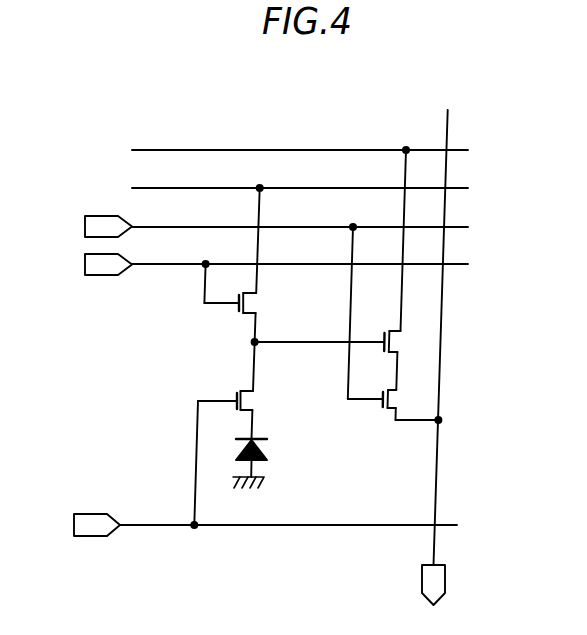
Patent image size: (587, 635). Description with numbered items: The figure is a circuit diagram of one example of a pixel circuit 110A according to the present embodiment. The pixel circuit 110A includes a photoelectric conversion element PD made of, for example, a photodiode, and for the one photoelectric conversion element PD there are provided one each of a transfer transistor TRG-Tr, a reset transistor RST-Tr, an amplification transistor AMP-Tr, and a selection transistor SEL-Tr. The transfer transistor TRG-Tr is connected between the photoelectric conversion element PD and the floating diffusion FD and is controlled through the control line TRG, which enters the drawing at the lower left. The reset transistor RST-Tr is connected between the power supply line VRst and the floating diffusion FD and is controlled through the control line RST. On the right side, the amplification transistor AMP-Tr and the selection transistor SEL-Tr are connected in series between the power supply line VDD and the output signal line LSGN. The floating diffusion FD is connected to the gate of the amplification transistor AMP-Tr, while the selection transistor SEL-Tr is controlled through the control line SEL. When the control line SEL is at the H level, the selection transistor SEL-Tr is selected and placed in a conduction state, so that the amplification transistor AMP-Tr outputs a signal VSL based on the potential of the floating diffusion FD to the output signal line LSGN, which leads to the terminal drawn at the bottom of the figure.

The pixel circuit 110A is at (325, 72).
The power supply line VDD is at (300, 140).
The power supply line VRst is at (300, 178).
The control line SEL is at (254, 306).
The control line RST is at (254, 277).
The control line TRG is at (241, 469).
The reset transistor RST-Tr is at (236, 313).
The transfer transistor TRG-Tr is at (232, 410).
The amplification transistor AMP-Tr is at (410, 343).
The selection transistor SEL-Tr is at (407, 400).
The floating diffusion FD is at (317, 352).
The photoelectric conversion element PD is at (264, 463).
The output signal line LSGN is at (437, 487).
The signal VSL is at (437, 600).